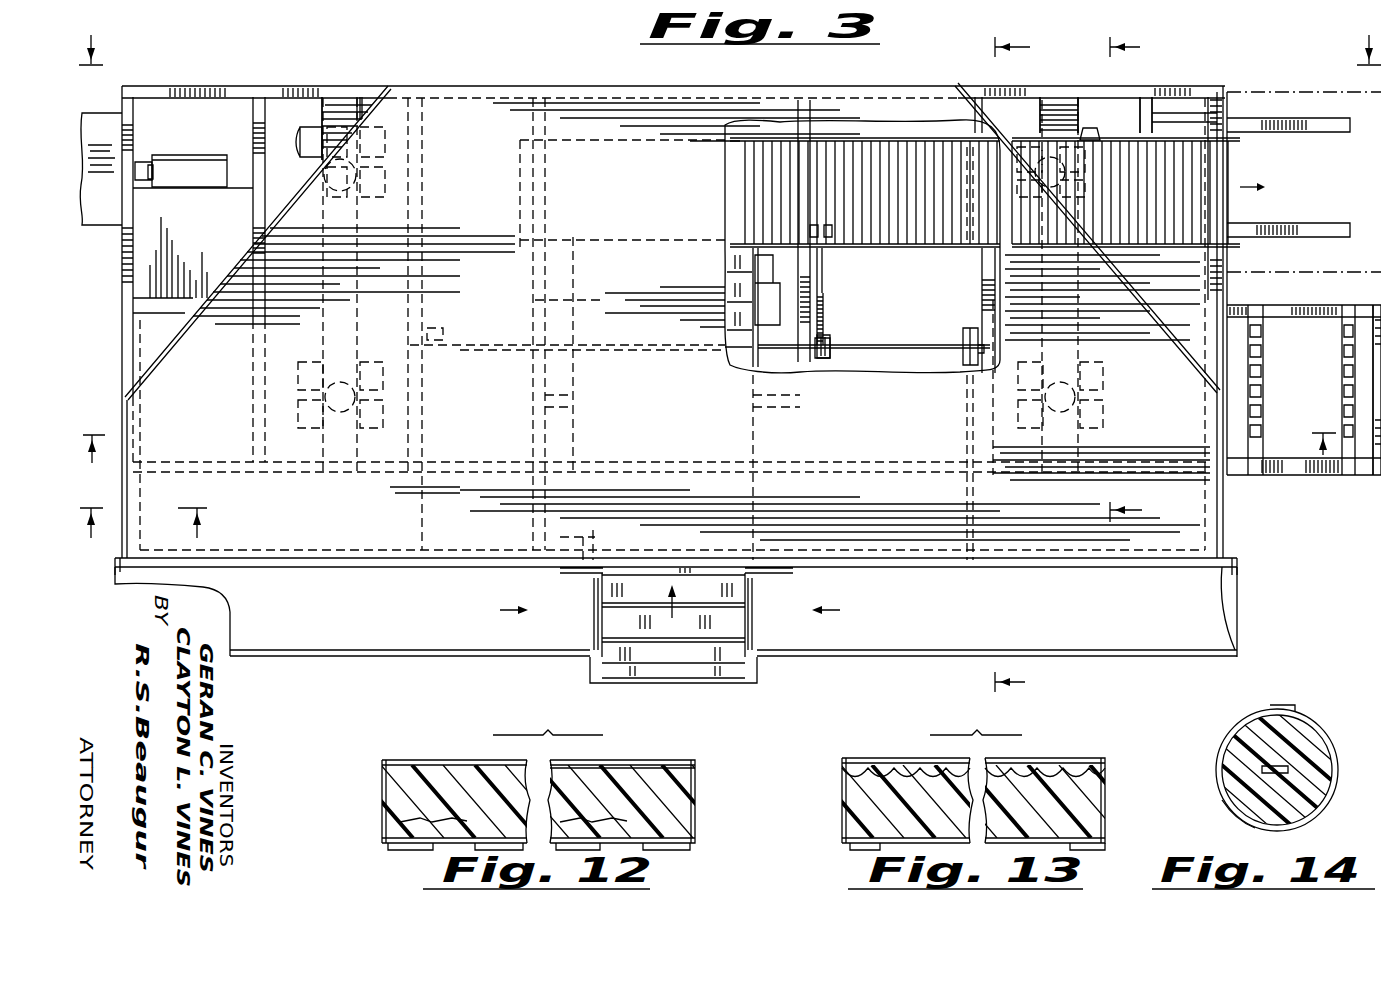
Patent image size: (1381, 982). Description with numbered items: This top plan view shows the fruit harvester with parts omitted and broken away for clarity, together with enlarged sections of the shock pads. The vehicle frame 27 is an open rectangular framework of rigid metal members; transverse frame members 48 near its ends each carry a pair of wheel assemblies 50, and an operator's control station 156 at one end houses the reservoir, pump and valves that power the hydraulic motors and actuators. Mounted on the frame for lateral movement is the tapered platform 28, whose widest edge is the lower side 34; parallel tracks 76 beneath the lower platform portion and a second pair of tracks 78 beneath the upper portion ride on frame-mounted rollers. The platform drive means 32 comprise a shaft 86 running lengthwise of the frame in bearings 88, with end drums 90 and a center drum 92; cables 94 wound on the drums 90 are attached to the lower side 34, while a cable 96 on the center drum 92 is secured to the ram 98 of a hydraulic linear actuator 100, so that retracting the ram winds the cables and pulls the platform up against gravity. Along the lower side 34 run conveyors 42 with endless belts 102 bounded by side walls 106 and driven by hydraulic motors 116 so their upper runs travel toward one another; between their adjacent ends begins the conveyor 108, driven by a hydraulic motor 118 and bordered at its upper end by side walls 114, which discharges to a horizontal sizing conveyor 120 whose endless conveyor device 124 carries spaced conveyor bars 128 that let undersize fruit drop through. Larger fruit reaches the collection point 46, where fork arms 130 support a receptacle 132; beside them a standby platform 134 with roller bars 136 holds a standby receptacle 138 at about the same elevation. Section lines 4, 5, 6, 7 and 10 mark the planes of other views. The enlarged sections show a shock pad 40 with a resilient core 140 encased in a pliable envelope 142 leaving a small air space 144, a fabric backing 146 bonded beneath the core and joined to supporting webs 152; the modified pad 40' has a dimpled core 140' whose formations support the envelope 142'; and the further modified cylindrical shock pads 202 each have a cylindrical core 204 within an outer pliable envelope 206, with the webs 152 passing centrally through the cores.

In FIG. 3, the platform 28 is at (525, 90).
In FIG. 3, the lower side 34 is at (1220, 554).
In FIG. 3, the tracks 76 is at (122, 488).
In FIG. 3, the operator's control station 156 is at (197, 120).
In FIG. 3, the wheel assemblies 50 is at (305, 123).
In FIG. 3, the transverse frame members 48 is at (357, 87).
In FIG. 3, the vehicle frame 27 is at (1197, 97).
In FIG. 3, the central collection point 46 is at (1296, 102).
In FIG. 3, the fork arms 130 is at (1256, 118).
In FIG. 3, the receptacle 132 is at (1356, 269).
In FIG. 3, the roller bars 136 is at (1267, 475).
In FIG. 3, the standby platform 134 is at (1315, 475).
In FIG. 3, the standby receptacle 138 is at (1370, 475).
In FIG. 3, the conveyor bars 128 is at (1223, 168).
In FIG. 3, the hydraulic linear actuator 100 is at (833, 117).
In FIG. 3, the sizing conveyor 120 is at (882, 140).
In FIG. 3, the endless conveyor device 124 is at (915, 243).
In FIG. 3, the tracks 78 is at (548, 195).
In FIG. 3, the side walls 114 is at (578, 258).
In FIG. 3, the ram 98 is at (825, 266).
In FIG. 3, the cable 96 is at (823, 302).
In FIG. 3, the center drum 92 is at (826, 332).
In FIG. 3, the platform drive means 32 is at (831, 343).
In FIG. 3, the shaft 86 is at (905, 345).
In FIG. 3, the drums 90 is at (963, 340).
In FIG. 3, the bearings 88 is at (988, 340).
In FIG. 3, the cables 94 is at (438, 444).
In FIG. 3, the hydraulic motors 116 is at (562, 547).
In FIG. 3, the hydraulic motor 118 is at (767, 318).
In FIG. 3, the side walls 106 is at (500, 652).
In FIG. 3, the endless conveyor belts 102 is at (348, 645).
In FIG. 3, the conveyors 42 is at (433, 636).
In FIG. 3, the conveyor 108 is at (697, 663).
In FIG. 3, the section line 5 is at (730, 46).
In FIG. 3, the section line 6 is at (1029, 364).
In FIG. 3, the section line 7 is at (1135, 285).
In FIG. 3, the section line 4 is at (698, 455).
In FIG. 3, the section line 10 is at (151, 541).
In FIG. 12, the shock pads 40 is at (564, 801).
In FIG. 12, the inner resilient core 140 is at (443, 781).
In FIG. 12, the outer flexible pliable envelope 142 is at (630, 781).
In FIG. 12, the air space 144 is at (668, 763).
In FIG. 12, the pad supporting webs 152 is at (420, 825).
In FIG. 14, the pad supporting webs 152 is at (1258, 766).
In FIG. 12, the fabric backing 146 is at (445, 843).
In FIG. 13, the modified shock pad 40' is at (990, 788).
In FIG. 13, the pad core 140' is at (888, 781).
In FIG. 13, the pad envelope 142' is at (1043, 781).
In FIG. 14, the cylindrical resilient shock pads 202 is at (1305, 688).
In FIG. 14, the cylindrical inner resilient core 204 is at (1230, 762).
In FIG. 14, the outer pliable envelope 206 is at (1236, 816).